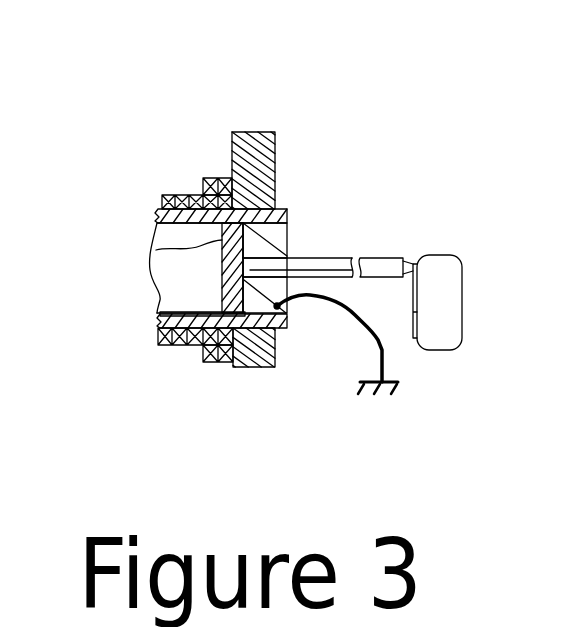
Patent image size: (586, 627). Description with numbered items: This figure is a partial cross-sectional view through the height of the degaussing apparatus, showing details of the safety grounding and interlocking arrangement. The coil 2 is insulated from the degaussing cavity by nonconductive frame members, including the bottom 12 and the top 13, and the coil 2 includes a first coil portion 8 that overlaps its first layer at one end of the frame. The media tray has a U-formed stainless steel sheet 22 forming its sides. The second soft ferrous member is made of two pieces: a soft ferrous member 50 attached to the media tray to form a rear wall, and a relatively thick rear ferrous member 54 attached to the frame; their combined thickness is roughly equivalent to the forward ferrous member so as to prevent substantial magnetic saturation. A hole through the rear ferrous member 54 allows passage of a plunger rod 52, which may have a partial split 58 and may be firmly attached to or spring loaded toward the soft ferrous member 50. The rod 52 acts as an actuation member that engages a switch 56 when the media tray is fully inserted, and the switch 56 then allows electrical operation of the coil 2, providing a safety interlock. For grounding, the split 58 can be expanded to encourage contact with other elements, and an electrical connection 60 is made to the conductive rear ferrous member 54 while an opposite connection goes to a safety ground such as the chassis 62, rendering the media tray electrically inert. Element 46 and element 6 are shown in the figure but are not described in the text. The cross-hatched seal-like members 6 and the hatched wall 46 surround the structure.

The coil 2 is at (163, 147).
The housing wall 46 is at (242, 147).
The top 13 is at (277, 213).
The rear ferrous member 54 is at (283, 235).
The partial split 58 is at (303, 268).
The plunger rod 52 is at (378, 268).
The switch 56 is at (435, 308).
The soft ferrous member 50 is at (150, 250).
The stainless steel sheet 22 is at (170, 278).
The bottom 12 is at (152, 322).
The seal ring 6 is at (185, 343).
The first coil portion 8 is at (212, 360).
The electrical connection 60 is at (290, 316).
The chassis 62 is at (383, 392).